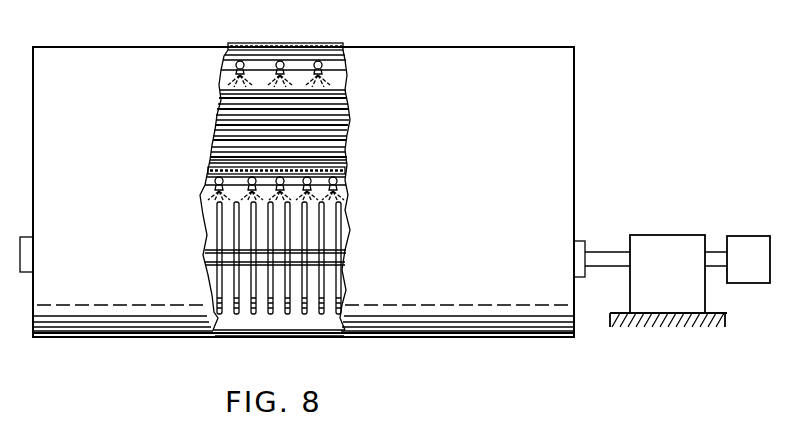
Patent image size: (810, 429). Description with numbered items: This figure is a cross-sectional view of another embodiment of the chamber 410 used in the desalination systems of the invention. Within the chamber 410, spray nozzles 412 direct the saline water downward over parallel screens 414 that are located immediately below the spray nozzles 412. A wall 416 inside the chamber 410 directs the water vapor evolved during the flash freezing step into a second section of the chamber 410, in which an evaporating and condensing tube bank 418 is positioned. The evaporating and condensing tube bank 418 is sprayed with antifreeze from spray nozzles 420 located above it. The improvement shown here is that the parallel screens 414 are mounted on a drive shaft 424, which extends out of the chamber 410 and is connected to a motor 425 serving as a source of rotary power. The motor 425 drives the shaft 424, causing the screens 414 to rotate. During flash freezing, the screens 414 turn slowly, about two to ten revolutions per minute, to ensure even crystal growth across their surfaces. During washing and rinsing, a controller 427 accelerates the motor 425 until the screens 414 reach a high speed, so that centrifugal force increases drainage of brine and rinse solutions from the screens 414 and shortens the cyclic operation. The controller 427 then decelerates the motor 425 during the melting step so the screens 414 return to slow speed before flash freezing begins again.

The chamber 410 is at (497, 47).
The spray nozzles 412 is at (213, 181).
The parallel screens 414 is at (337, 226).
The wall 416 is at (318, 168).
The evaporating and condensing tube bank 418 is at (225, 147).
The spray nozzles 420 is at (281, 58).
The drive shaft 424 is at (330, 256).
The motor 425 is at (660, 238).
The controller 427 is at (742, 236).